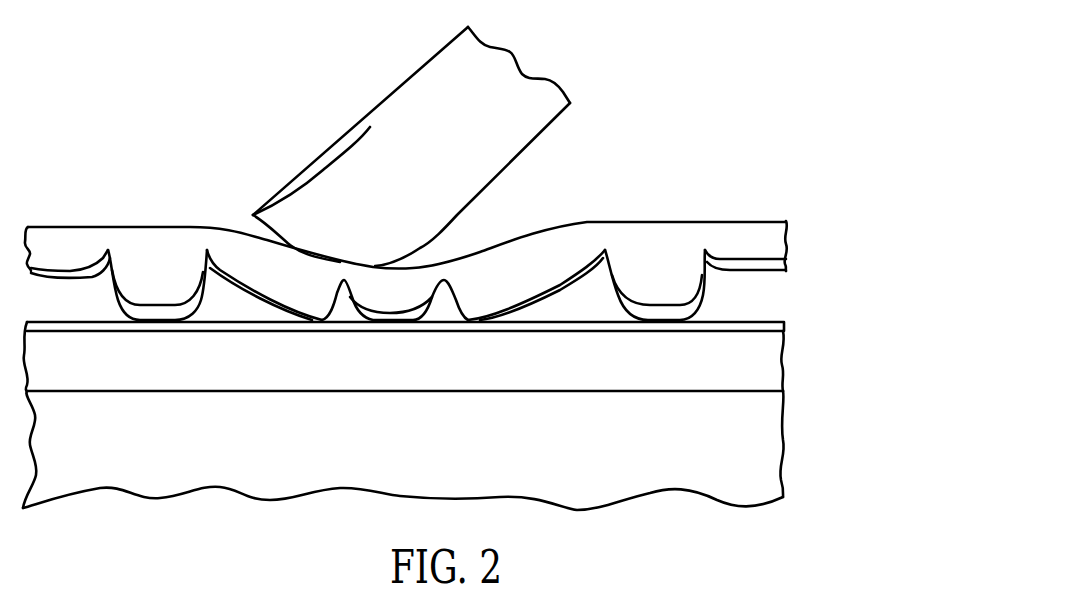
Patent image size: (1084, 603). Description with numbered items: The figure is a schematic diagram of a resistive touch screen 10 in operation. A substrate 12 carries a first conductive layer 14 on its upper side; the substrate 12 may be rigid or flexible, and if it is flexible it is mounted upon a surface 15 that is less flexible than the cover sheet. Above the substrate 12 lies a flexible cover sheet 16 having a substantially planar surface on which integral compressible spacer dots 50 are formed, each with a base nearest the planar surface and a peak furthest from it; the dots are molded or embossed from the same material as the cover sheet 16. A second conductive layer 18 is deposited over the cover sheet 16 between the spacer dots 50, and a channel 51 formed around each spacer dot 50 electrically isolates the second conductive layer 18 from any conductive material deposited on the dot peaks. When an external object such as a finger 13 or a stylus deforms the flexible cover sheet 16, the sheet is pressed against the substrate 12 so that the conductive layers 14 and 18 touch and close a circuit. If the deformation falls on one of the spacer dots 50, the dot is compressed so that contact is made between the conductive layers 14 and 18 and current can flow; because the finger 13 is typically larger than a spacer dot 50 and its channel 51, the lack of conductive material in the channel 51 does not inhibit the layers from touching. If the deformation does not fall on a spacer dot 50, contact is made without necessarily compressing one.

The touch sensor device 10 is at (730, 132).
The substrate 12 is at (763, 365).
The finger 13 is at (513, 72).
The first conductive layer 14 is at (771, 326).
The surface 15 is at (752, 447).
The flexible cover sheet 16 is at (763, 237).
The second conductive layer 18 is at (777, 264).
The integral compressible spacer dot 50 is at (652, 293).
The channel 51 is at (706, 265).